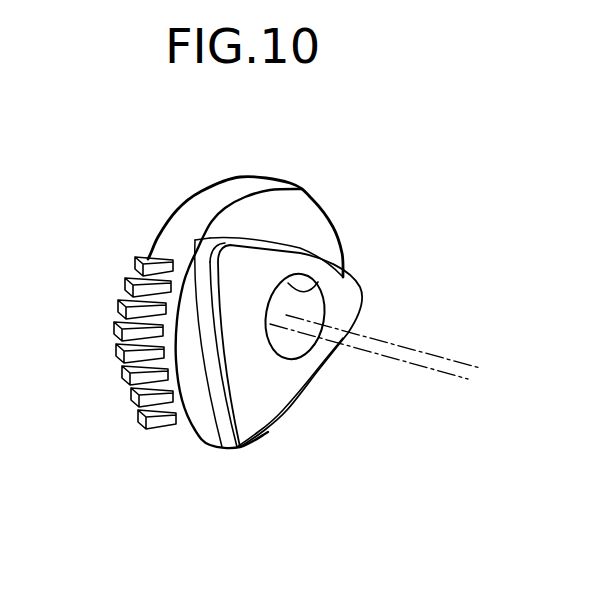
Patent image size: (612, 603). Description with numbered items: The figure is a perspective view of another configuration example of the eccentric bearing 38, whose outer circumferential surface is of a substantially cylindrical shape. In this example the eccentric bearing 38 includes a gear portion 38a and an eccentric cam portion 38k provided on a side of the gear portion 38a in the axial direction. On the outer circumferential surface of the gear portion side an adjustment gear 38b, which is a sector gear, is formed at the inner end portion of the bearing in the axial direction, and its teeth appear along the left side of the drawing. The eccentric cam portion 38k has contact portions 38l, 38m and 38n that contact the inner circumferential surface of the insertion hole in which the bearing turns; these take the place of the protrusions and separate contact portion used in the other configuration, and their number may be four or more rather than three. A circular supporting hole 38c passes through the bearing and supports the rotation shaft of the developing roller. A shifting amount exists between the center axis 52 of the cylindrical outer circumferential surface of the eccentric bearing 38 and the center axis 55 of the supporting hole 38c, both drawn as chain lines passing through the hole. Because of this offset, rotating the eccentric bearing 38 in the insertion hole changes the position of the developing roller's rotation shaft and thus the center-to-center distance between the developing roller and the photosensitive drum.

The eccentric bearing 38 is at (363, 251).
The gear portion 38a is at (180, 242).
The adjustment gear 38b is at (152, 428).
The supporting hole 38c is at (342, 252).
The eccentric cam portion 38k is at (260, 366).
The contact portion 38l is at (210, 238).
The contact portion 38m is at (220, 430).
The contact portion 38n is at (362, 295).
The center axis of the supporting hole 55 is at (418, 350).
The center axis of the outer circumferential surface 52 is at (412, 362).